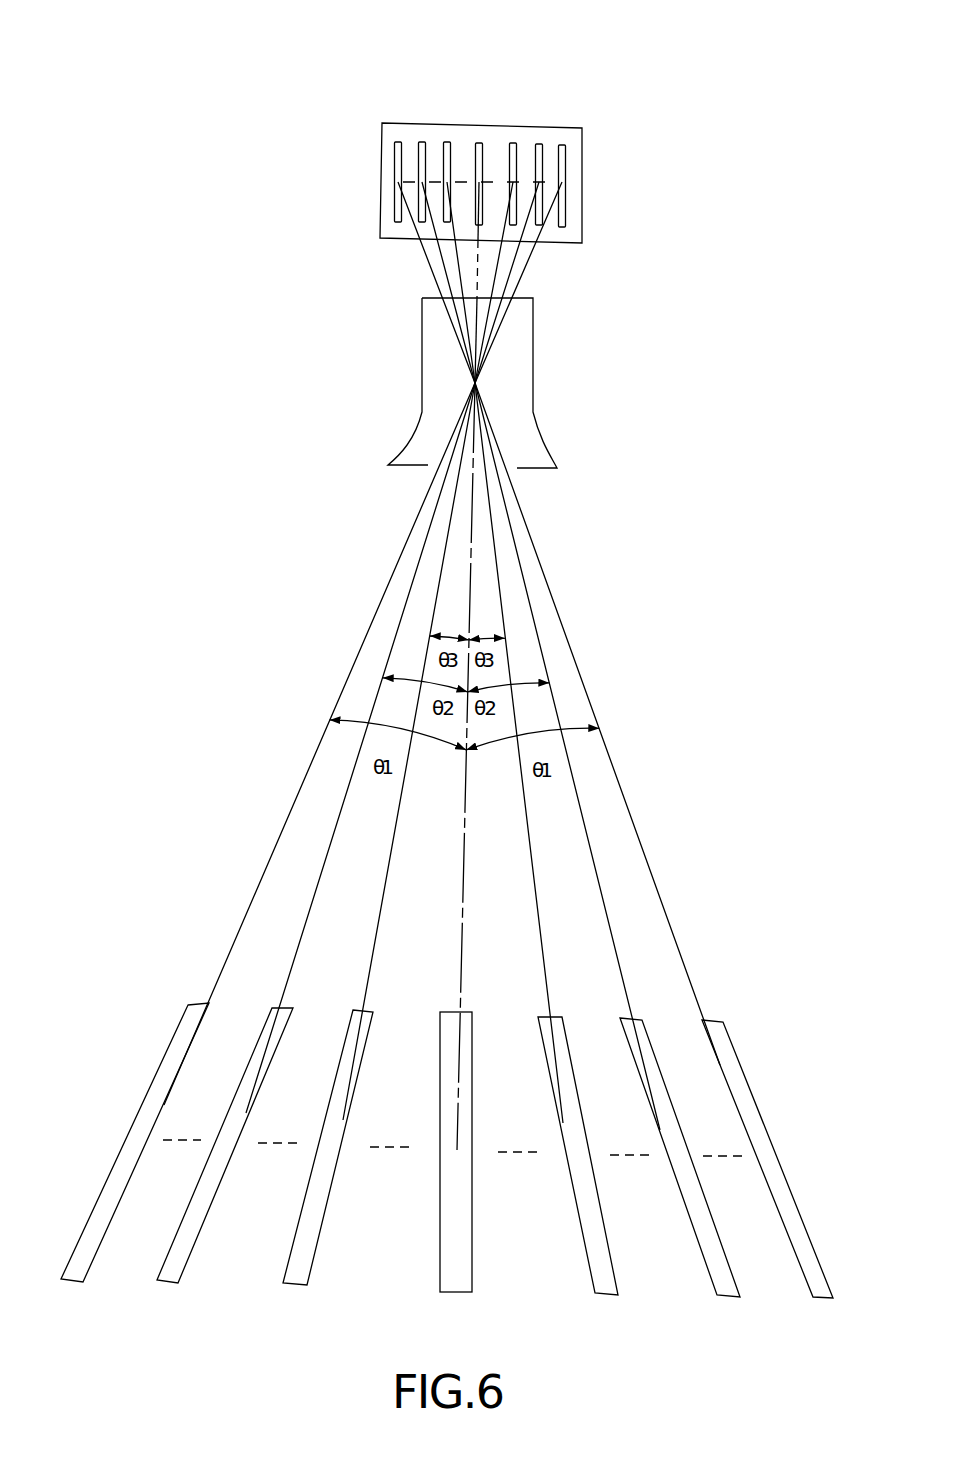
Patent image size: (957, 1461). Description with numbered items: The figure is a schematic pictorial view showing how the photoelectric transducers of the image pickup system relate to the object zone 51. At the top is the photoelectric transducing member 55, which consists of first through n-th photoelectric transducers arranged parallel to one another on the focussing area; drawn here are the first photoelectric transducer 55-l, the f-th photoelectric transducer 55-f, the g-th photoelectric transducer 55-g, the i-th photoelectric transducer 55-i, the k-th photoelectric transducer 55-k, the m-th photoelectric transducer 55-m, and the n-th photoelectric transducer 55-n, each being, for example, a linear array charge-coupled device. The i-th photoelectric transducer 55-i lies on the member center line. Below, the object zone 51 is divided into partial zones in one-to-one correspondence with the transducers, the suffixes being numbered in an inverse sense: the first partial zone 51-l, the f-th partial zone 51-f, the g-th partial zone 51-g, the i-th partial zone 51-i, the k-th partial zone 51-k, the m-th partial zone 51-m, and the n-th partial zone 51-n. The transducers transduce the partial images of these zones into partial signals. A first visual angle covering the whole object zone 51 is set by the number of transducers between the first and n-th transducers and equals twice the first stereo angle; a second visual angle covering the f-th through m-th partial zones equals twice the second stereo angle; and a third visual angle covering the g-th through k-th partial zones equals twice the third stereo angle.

The photoelectric transducing member 55 is at (481, 130).
The n-th photoelectric transducer 55-n is at (398, 141).
The m-th photoelectric transducer 55-m is at (422, 141).
The k-th photoelectric transducer 55-k is at (447, 141).
The i-th photoelectric transducer 55-i is at (479, 142).
The g-th photoelectric transducer 55-g is at (513, 142).
The f-th photoelectric transducer 55-f is at (539, 143).
The first photoelectric transducer 55-l is at (562, 144).
The object zone 51 is at (450, 1169).
The first partial zone 51-l is at (72, 1279).
The f-th partial zone 51-f is at (167, 1282).
The g-th partial zone 51-g is at (297, 1284).
The i-th partial zone 51-i is at (456, 1292).
The k-th partial zone 51-k is at (607, 1294).
The m-th partial zone 51-m is at (727, 1296).
The n-th partial zone 51-n is at (822, 1298).